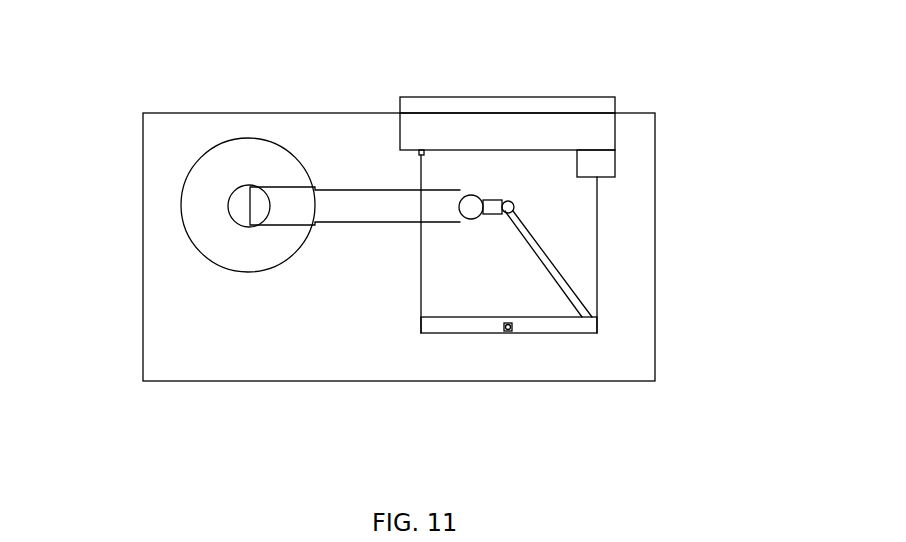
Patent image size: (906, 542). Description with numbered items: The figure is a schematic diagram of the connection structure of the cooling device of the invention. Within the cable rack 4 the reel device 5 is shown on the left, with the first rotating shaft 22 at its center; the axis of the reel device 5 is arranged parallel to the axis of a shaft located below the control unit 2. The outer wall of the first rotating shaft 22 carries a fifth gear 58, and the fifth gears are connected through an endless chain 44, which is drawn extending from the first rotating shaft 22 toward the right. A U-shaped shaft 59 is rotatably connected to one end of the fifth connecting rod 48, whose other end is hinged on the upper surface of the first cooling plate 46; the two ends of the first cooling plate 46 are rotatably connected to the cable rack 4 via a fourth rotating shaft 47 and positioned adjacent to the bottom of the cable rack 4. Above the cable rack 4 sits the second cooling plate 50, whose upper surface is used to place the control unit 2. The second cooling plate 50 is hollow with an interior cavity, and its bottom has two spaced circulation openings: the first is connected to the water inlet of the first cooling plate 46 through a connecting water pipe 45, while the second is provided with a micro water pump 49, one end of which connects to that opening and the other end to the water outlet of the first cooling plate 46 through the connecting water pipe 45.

The control unit 2 is at (527, 97).
The cable rack 4 is at (267, 329).
The reel device 5 is at (263, 160).
The first rotating shaft 22 is at (248, 205).
The endless chain 44 is at (360, 188).
The connecting water pipe 45 is at (420, 240).
The first cooling plate 46 is at (457, 326).
The fourth rotating shaft 47 is at (512, 332).
The fifth connecting rod 48 is at (552, 263).
The micro water pump 49 is at (615, 163).
The second cooling plate 50 is at (552, 132).
The fifth gear 58 is at (472, 207).
The U-shaped shaft 59 is at (498, 201).